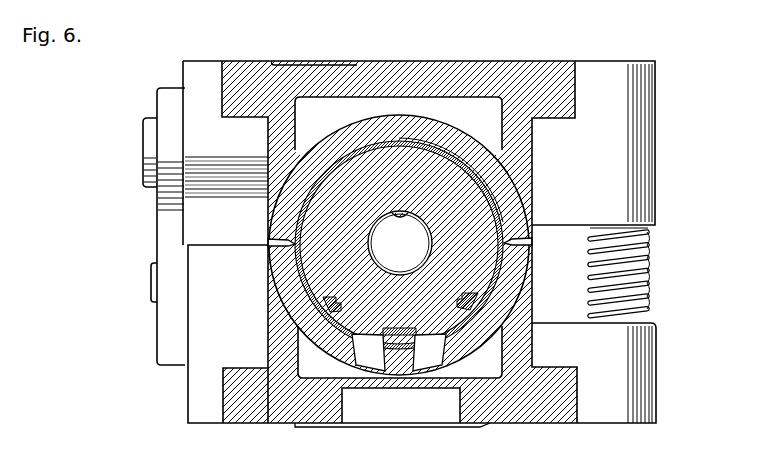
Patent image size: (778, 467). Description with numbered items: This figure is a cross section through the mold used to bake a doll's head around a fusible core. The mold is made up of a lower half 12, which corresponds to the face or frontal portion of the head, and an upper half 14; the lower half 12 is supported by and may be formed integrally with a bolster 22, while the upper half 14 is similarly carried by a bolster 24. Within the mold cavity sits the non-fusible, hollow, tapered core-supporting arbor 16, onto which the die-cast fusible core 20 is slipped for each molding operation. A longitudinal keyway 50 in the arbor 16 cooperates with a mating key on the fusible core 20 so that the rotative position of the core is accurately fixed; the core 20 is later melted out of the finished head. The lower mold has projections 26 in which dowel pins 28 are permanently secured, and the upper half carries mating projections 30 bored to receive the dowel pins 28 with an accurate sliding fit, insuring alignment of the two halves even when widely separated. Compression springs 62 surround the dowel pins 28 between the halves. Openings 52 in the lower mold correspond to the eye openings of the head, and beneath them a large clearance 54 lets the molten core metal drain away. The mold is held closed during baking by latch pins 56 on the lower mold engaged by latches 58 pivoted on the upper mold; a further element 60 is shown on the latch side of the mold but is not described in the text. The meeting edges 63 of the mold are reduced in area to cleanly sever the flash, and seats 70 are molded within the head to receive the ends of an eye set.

The lower half 12 is at (400, 352).
The upper half 14 is at (399, 125).
The core-supporting arbor 16 is at (400, 243).
The fusible core 20 is at (393, 243).
The bolster 22 is at (484, 405).
The bolster 24 is at (340, 80).
The projections 26 is at (640, 367).
The dowel pins 28 is at (621, 272).
The mating projections 30 is at (640, 183).
The keyway 50 is at (397, 218).
The openings 52 is at (430, 358).
The clearance 54 is at (401, 405).
The latch pins 56 is at (152, 282).
The latches 58 is at (170, 330).
The boss 60 is at (150, 147).
The compression springs 62 is at (588, 272).
The meeting edges 63 is at (282, 243).
The seats 70 is at (322, 305).